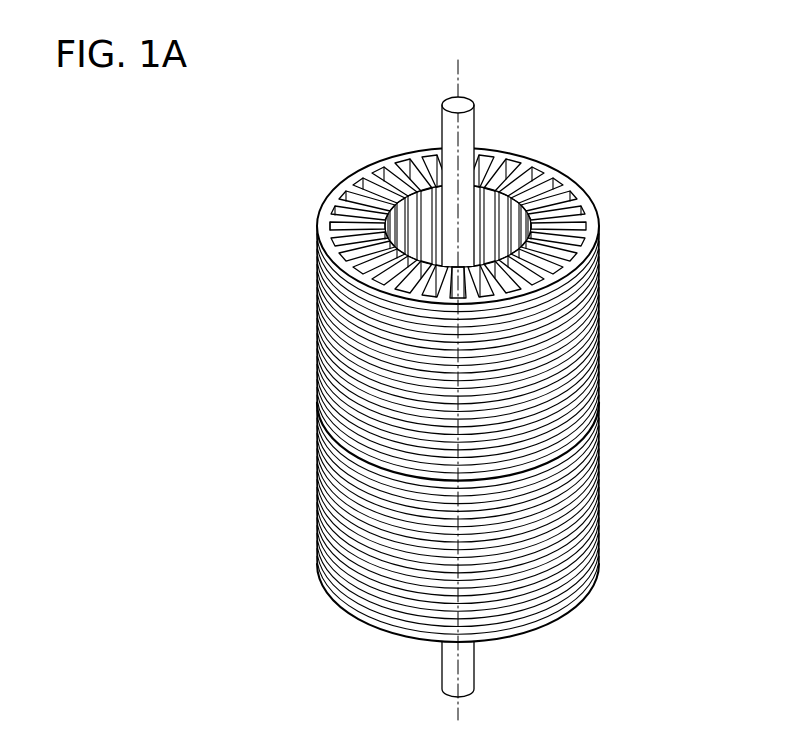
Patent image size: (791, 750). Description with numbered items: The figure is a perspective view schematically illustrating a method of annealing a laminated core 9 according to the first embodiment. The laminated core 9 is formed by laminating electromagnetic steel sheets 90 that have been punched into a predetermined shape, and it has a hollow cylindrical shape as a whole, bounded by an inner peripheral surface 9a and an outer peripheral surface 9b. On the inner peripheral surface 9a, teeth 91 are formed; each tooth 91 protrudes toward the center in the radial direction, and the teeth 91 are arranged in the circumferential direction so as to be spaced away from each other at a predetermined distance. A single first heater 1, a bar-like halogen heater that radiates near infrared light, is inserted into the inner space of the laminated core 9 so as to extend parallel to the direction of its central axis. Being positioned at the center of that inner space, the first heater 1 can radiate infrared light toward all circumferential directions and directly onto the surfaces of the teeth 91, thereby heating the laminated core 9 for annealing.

The first heater 1 is at (466, 125).
The laminated core 9 is at (449, 382).
The inner peripheral surface 9a is at (486, 210).
The outer peripheral surface 9b is at (600, 218).
The electromagnetic steel sheet 90 is at (590, 298).
The tooth 91 is at (398, 192).